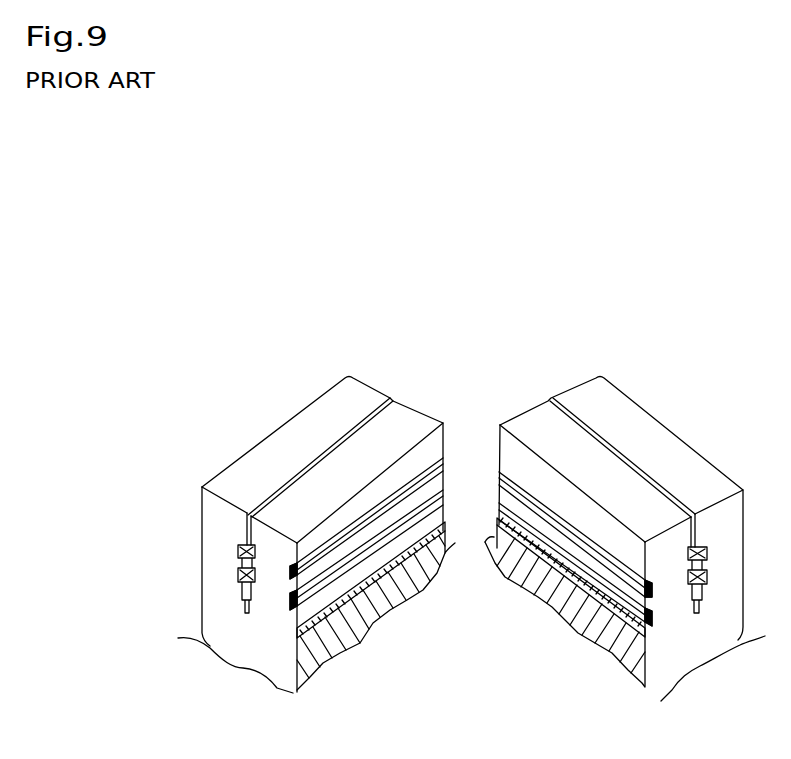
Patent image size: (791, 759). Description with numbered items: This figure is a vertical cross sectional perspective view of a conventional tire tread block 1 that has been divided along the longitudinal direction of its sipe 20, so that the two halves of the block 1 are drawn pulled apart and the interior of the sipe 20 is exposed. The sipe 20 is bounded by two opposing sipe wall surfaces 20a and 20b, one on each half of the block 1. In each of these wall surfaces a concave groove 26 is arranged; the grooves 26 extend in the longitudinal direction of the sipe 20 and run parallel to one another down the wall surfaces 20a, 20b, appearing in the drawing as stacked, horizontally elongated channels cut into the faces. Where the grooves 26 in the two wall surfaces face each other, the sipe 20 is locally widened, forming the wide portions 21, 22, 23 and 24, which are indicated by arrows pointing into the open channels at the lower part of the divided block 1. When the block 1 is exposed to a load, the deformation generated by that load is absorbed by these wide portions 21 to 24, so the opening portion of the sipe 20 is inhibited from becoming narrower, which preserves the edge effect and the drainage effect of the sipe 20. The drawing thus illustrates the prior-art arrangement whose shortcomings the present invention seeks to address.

The block 1 is at (233, 460).
The sipe 20 is at (313, 457).
The sipe wall surface 20a is at (418, 452).
The sipe wall surface 20b is at (523, 452).
The wide portion 21 is at (287, 572).
The wide portion 22 is at (652, 583).
The wide portion 23 is at (287, 600).
The wide portion 24 is at (655, 615).
The concave groove 26 is at (367, 520).